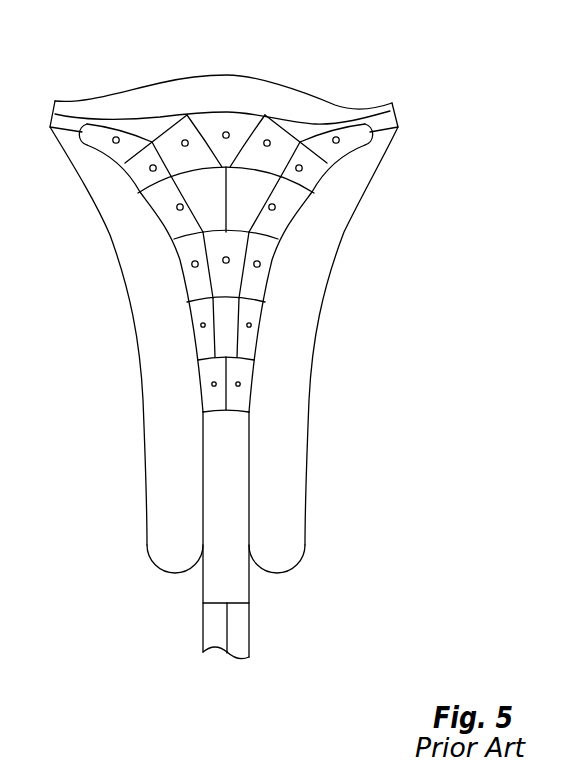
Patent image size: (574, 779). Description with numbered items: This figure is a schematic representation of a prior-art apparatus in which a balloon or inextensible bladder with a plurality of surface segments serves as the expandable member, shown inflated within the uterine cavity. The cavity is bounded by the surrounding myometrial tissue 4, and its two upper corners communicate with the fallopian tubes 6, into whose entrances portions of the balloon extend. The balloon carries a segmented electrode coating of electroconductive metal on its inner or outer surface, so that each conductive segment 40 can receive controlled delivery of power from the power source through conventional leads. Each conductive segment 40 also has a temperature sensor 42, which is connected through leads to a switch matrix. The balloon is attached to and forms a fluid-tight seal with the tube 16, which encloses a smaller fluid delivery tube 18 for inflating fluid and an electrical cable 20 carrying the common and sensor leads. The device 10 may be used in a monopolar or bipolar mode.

The flexible band 10 is at (251, 113).
The fallopian tubes 6 is at (74, 121).
The myometrial tissue 4 is at (290, 424).
The temperature sensor 42 is at (186, 266).
The conductive segment 40 is at (262, 278).
The tube 16 is at (242, 592).
The fluid delivery tube 18 is at (215, 627).
The electrical cable 20 is at (242, 642).